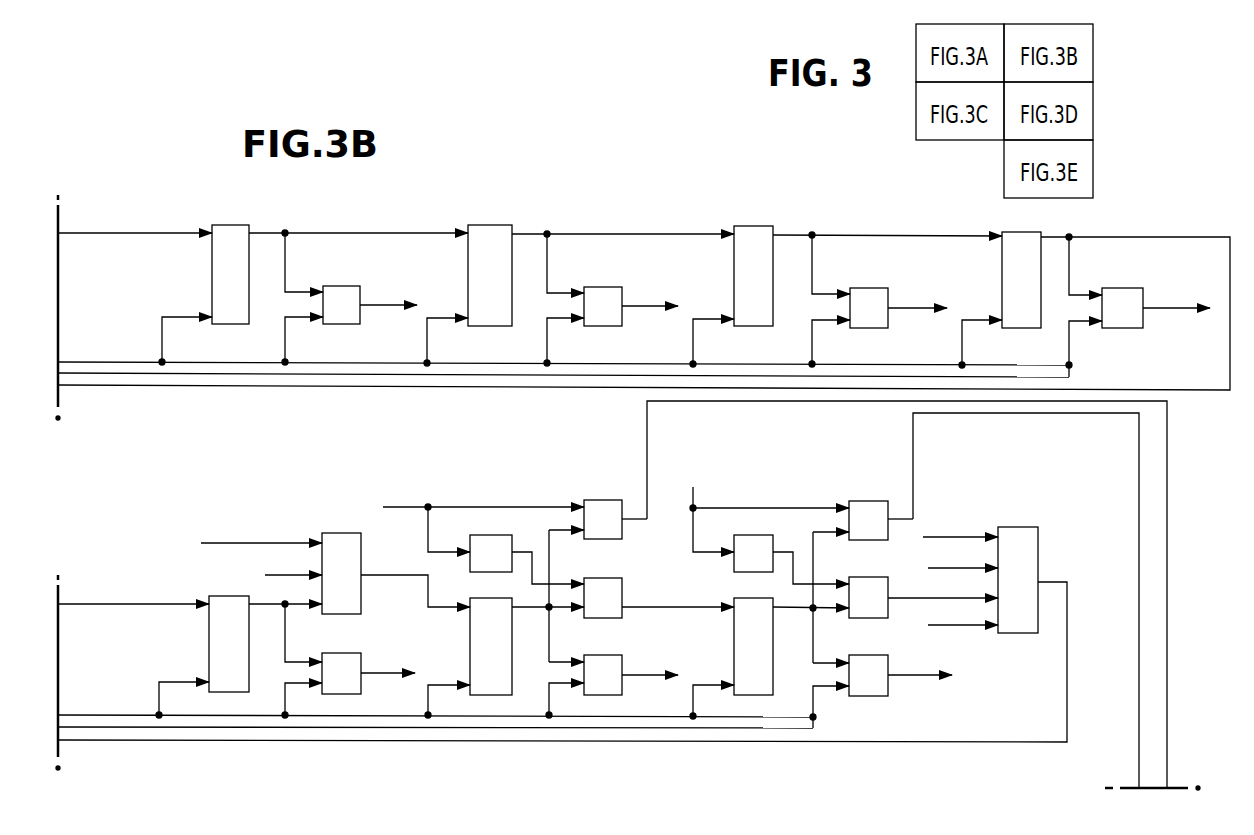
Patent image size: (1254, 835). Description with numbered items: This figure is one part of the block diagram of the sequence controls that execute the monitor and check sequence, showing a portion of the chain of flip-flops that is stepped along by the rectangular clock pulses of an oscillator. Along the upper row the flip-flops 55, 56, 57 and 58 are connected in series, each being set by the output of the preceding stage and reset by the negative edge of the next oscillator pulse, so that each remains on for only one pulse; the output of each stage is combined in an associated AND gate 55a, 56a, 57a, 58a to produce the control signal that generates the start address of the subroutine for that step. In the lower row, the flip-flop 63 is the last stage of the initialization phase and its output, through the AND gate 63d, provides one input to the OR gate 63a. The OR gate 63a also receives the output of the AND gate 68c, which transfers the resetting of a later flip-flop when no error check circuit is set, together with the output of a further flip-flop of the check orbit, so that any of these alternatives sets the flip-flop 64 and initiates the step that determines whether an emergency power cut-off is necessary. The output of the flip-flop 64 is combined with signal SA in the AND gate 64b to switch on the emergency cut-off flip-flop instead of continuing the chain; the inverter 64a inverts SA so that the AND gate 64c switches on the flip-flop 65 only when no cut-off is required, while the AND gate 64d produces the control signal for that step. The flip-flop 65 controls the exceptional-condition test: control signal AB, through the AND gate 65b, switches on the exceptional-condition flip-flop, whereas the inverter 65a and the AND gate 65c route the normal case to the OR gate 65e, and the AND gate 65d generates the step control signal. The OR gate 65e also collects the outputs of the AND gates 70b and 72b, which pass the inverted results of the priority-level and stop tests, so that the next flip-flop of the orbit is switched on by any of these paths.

The flip-flop 55 is at (225, 230).
The AND gate 55a is at (355, 318).
The flip-flop 56 is at (482, 230).
The AND gate 56a is at (616, 320).
The flip-flop 57 is at (748, 230).
The AND gate 57a is at (880, 321).
The flip-flop 58 is at (1012, 236).
The AND gate 58a is at (1135, 322).
The flip-flop 63 is at (210, 628).
The OR gate 63a is at (335, 552).
The AND gate 63d is at (343, 657).
The flip-flop 64 is at (475, 620).
The inverter 64a is at (490, 542).
The AND gate 64b is at (605, 503).
The AND gate 64c is at (605, 580).
The AND gate 64d is at (606, 657).
The flip-flop 65 is at (740, 620).
The inverter 65a is at (736, 566).
The AND gate 65b is at (869, 503).
The AND gate 65c is at (869, 580).
The AND gate 65d is at (878, 690).
The OR gate 65e is at (1002, 560).
The AND gate 68c is at (333, 505).
The AND gate 72b is at (960, 555).
The AND gate 70b is at (960, 614).